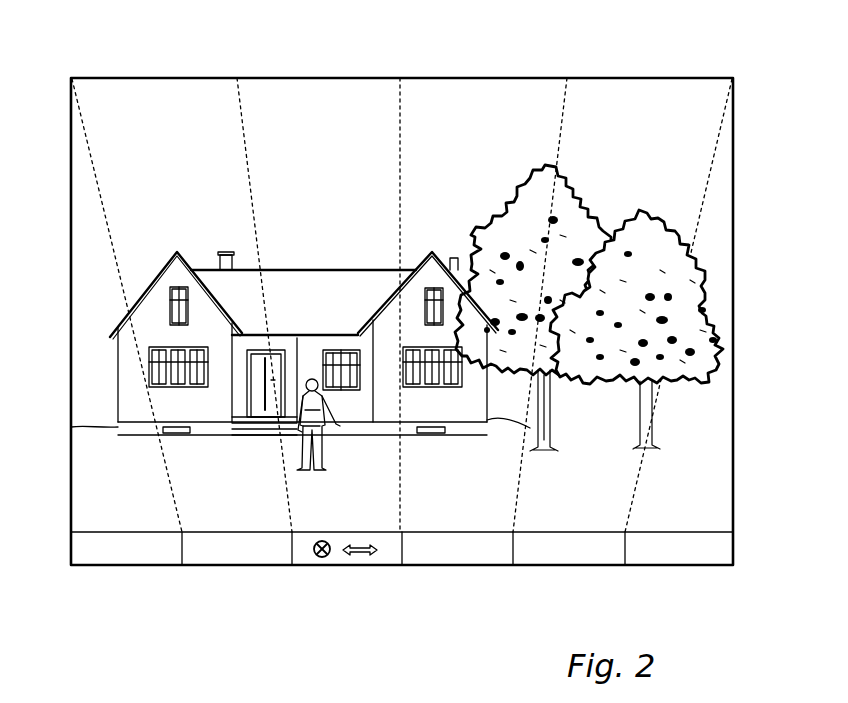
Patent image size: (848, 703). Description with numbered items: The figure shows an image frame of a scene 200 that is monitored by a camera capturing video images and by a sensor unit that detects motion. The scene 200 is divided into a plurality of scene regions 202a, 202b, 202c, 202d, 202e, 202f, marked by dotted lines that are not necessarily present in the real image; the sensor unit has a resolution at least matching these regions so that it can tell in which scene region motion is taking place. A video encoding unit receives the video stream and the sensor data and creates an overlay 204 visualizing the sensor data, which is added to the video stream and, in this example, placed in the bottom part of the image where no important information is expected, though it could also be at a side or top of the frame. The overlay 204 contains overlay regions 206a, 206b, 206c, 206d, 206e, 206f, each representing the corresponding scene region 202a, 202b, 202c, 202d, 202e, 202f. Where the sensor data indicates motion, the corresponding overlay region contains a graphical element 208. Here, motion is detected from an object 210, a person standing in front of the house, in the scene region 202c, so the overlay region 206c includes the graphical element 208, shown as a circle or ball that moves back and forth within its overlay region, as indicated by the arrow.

The scene 200 is at (742, 246).
The scene region 202a is at (85, 343).
The scene region 202b is at (173, 92).
The scene region 202c is at (338, 92).
The scene region 202d is at (475, 92).
The scene region 202e is at (637, 92).
The scene region 202f is at (715, 440).
The overlay 204 is at (742, 555).
The overlay region 206a is at (128, 558).
The overlay region 206b is at (238, 558).
The overlay region 206c is at (362, 562).
The overlay region 206d is at (473, 553).
The overlay region 206e is at (575, 555).
The overlay region 206f is at (670, 555).
The graphical element 208 is at (325, 560).
The object 210 is at (292, 416).